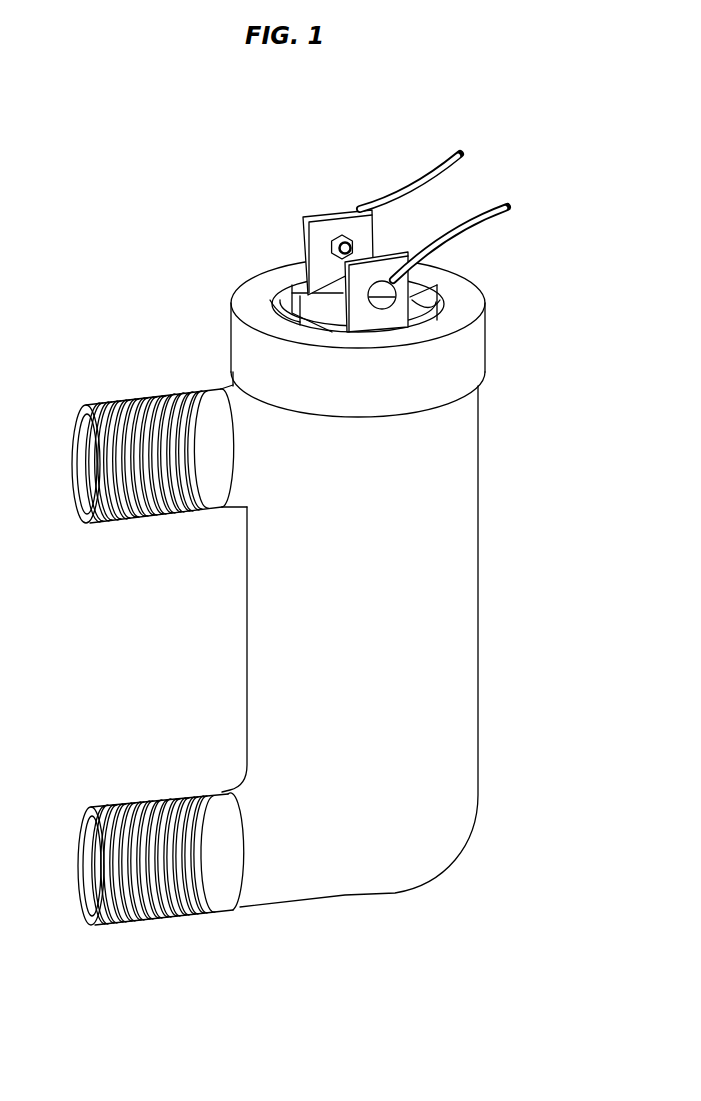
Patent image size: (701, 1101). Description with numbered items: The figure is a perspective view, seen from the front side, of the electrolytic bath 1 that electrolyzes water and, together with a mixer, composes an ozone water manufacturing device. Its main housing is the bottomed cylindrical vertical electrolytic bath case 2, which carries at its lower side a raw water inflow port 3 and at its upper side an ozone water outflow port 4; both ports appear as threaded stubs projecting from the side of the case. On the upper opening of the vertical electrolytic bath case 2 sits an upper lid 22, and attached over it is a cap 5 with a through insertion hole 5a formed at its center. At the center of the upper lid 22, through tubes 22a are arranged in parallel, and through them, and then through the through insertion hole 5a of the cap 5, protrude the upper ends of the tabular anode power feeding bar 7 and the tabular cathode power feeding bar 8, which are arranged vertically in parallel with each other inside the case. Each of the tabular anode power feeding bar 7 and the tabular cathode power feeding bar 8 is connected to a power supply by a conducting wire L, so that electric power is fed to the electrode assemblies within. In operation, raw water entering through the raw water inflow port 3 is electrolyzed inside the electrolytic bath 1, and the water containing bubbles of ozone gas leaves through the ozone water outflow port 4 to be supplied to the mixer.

The electrolytic bath 1 is at (207, 292).
The vertical electrolytic bath case 2 is at (447, 595).
The raw water inflow port 3 is at (85, 892).
The ozone water outflow port 4 is at (87, 480).
The cap 5 is at (410, 393).
The through insertion hole 5a is at (296, 286).
The tabular anode power feeding bar 7 is at (393, 247).
The tabular cathode power feeding bar 8 is at (330, 212).
The upper lid 22 is at (423, 287).
The through tubes 22a is at (262, 314).
The conducting wire L is at (430, 158).